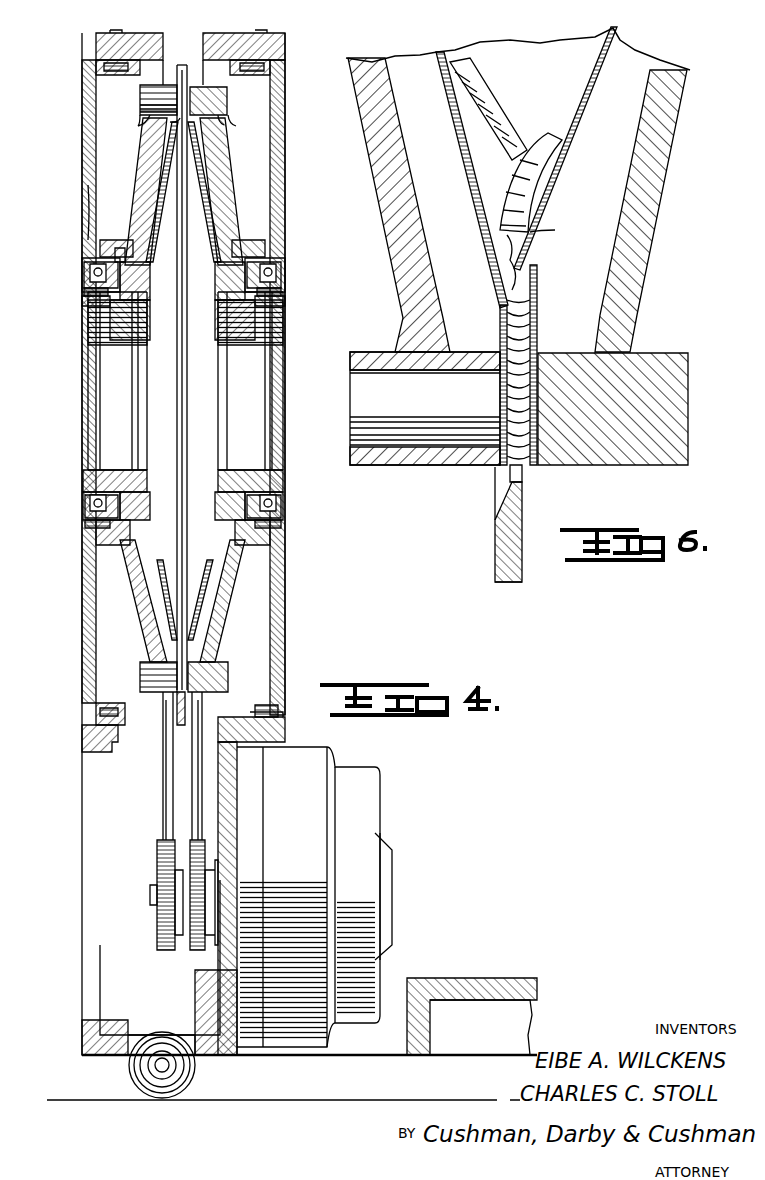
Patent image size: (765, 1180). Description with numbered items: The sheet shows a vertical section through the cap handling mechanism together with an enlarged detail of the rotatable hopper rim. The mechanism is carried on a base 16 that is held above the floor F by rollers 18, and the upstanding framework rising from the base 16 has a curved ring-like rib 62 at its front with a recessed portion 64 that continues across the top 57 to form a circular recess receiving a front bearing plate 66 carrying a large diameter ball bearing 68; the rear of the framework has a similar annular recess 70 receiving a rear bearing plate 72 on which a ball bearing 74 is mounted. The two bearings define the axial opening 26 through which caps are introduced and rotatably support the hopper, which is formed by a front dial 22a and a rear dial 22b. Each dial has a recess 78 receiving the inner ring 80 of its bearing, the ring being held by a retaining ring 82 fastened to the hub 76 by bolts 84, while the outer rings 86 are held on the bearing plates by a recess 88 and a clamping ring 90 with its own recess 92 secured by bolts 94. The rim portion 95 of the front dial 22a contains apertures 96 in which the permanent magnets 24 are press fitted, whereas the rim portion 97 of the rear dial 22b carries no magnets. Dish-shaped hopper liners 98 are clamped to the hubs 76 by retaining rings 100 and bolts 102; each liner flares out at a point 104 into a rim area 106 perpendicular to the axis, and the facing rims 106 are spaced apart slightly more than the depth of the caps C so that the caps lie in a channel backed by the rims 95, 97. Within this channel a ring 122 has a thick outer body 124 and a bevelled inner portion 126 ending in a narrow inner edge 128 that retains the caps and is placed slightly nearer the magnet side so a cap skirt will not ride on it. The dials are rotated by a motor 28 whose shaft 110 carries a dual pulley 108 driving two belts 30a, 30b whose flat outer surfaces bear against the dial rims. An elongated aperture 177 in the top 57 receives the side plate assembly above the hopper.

In FIG. 4, the base 16 is at (455, 978).
In FIG. 4, the rollers 18 is at (128, 1070).
In FIG. 4, the front hopper dial 22a is at (145, 160).
In FIG. 6, the front hopper dial 22a is at (388, 228).
In FIG. 4, the rear hopper dial 22b is at (225, 172).
In FIG. 6, the rear hopper dial 22b is at (655, 228).
In FIG. 4, the permanent magnets 24 is at (140, 100).
In FIG. 6, the permanent magnets 24 is at (350, 405).
In FIG. 4, the axial opening 26 is at (100, 355).
In FIG. 4, the motor 28 is at (390, 870).
In FIG. 4, the belt 30a is at (163, 790).
In FIG. 4, the belt 30b is at (192, 800).
In FIG. 4, the top of framework 57 is at (238, 34).
In FIG. 4, the curved ring-like rib 62 is at (82, 745).
In FIG. 4, the recessed portion 64 is at (82, 735).
In FIG. 4, the front bearing plate 66 is at (80, 595).
In FIG. 4, the ball bearing 68 is at (84, 505).
In FIG. 4, the annular recess 70 is at (262, 712).
In FIG. 4, the rear bearing plate 72 is at (288, 600).
In FIG. 4, the ball bearing 74 is at (283, 505).
In FIG. 4, the hubs 76 is at (88, 320).
In FIG. 4, the recess 78 is at (88, 274).
In FIG. 4, the inner ring 80 is at (84, 265).
In FIG. 4, the retaining rings 82 is at (86, 301).
In FIG. 4, the bolts 84 is at (86, 292).
In FIG. 4, the outer rings 86 is at (84, 262).
In FIG. 4, the recess 88 is at (90, 515).
In FIG. 4, the clamping ring 90 is at (106, 240).
In FIG. 4, the recess 92 is at (118, 250).
In FIG. 4, the bolts 94 is at (86, 240).
In FIG. 4, the rim portion 95 is at (140, 117).
In FIG. 6, the rim portion 95 is at (368, 352).
In FIG. 4, the apertures 96 is at (140, 108).
In FIG. 6, the apertures 96 is at (350, 443).
In FIG. 4, the rim portion 97 is at (228, 113).
In FIG. 6, the rim portion 97 is at (665, 353).
In FIG. 4, the hopper liners 98 is at (160, 200).
In FIG. 6, the hopper liners 98 is at (448, 78).
In FIG. 4, the retaining rings 100 is at (160, 290).
In FIG. 4, the bolts 102 is at (152, 285).
In FIG. 4, the flare point 104 is at (170, 136).
In FIG. 6, the flare point 104 is at (540, 258).
In FIG. 4, the rim area 106 is at (175, 98).
In FIG. 6, the rim area 106 is at (500, 332).
In FIG. 4, the dual pulley 108 is at (182, 930).
In FIG. 4, the shaft 110 is at (157, 908).
In FIG. 4, the ring 122 is at (177, 722).
In FIG. 6, the ring 122 is at (522, 512).
In FIG. 6, the outer body 124 is at (495, 565).
In FIG. 6, the inner portion 126 is at (495, 500).
In FIG. 6, the inner edge 128 is at (522, 472).
In FIG. 4, the elongated aperture 177 is at (200, 60).
In FIG. 6, the caps C is at (548, 236).
In FIG. 4, the floor F is at (313, 1100).